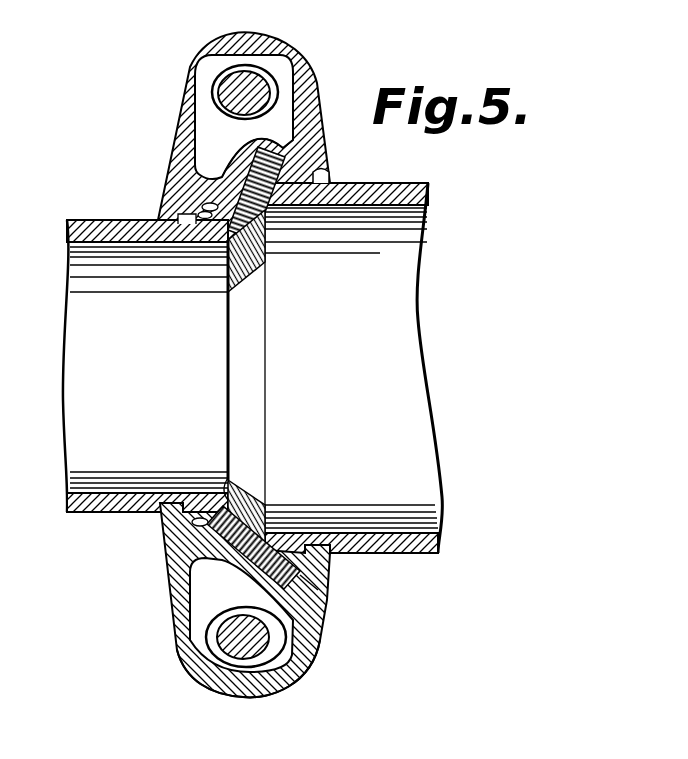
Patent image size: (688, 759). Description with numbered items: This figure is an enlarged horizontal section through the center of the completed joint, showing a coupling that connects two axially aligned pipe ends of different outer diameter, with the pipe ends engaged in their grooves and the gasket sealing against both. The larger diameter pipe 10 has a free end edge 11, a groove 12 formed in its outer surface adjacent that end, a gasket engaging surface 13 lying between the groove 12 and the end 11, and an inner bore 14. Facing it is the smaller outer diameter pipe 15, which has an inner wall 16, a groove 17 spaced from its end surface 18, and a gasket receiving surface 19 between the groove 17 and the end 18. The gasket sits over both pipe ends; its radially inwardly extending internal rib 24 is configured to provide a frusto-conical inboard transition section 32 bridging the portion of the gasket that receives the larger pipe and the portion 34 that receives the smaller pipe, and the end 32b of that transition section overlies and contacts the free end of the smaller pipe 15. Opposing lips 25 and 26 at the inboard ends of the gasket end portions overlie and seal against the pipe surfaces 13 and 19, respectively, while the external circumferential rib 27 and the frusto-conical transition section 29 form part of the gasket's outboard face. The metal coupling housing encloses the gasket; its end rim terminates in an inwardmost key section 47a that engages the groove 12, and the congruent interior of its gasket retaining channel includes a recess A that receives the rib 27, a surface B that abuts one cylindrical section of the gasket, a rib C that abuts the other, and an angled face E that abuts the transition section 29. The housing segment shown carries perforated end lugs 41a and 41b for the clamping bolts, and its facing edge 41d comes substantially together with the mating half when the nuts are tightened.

The larger diameter pipe 10 is at (427, 183).
The free end edge 11 is at (258, 248).
The groove 12 is at (315, 540).
The gasket engaging surface 13 is at (297, 200).
The inner surface or bore 14 is at (425, 531).
The smaller outer diameter pipe 15 is at (72, 217).
The inner surface or wall 16 is at (70, 258).
The groove 17 is at (133, 232).
The end surface or edge 18 is at (260, 273).
The gasket receiving surface 19 is at (222, 193).
The internal rib 24 is at (247, 520).
The lip 25 is at (325, 560).
The lip 26 is at (200, 520).
The external circumferential rib 27 is at (318, 591).
The frusto-conical transition section 29 is at (228, 167).
The inboard transition section 32 is at (255, 398).
The end of transition section 32b is at (214, 500).
The gasket portion receiving smaller pipe 34 is at (177, 205).
The end lug 41a is at (238, 33).
The end lug 41b is at (180, 657).
The facing edge 41d is at (198, 673).
The key section 47a is at (322, 173).
The recess A is at (293, 163).
The surface B is at (233, 147).
The rib C is at (220, 193).
The angled face E is at (250, 560).